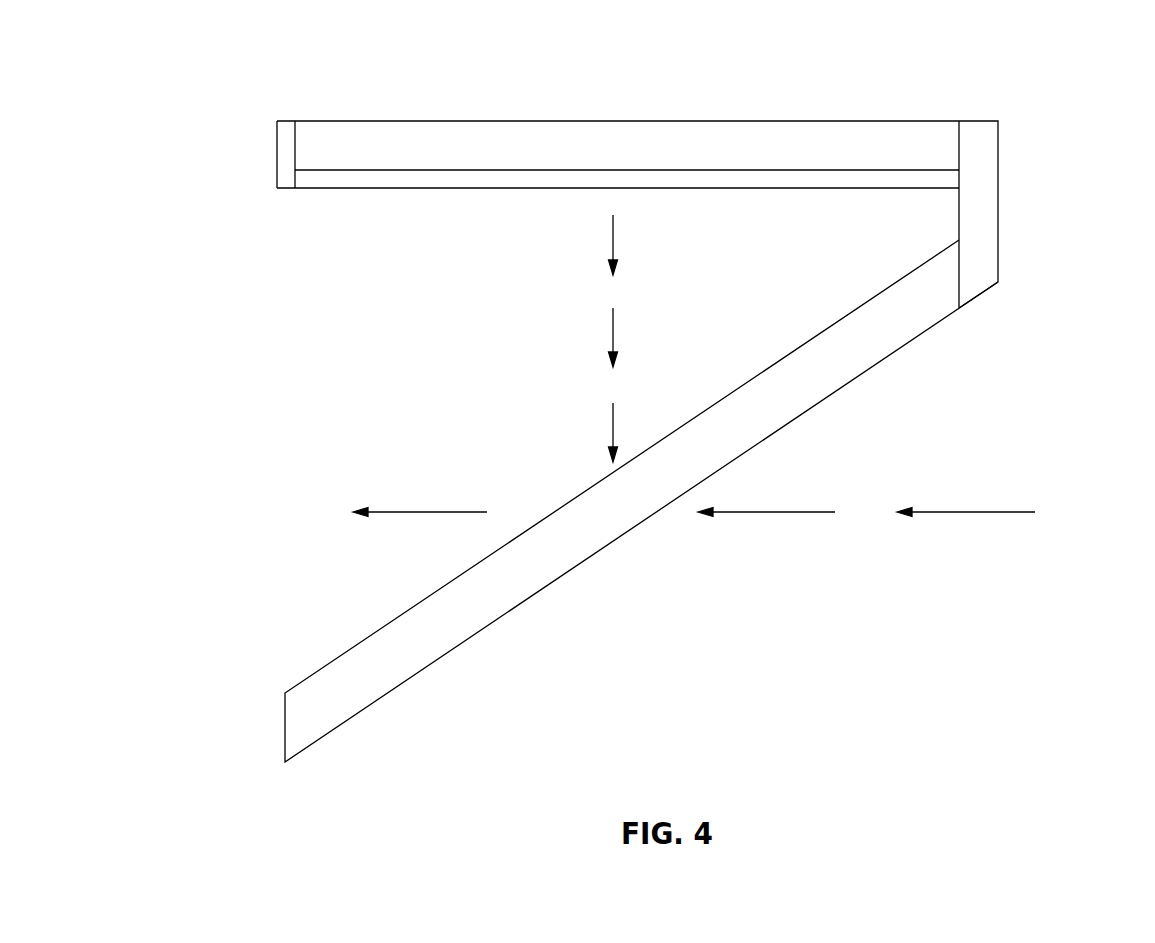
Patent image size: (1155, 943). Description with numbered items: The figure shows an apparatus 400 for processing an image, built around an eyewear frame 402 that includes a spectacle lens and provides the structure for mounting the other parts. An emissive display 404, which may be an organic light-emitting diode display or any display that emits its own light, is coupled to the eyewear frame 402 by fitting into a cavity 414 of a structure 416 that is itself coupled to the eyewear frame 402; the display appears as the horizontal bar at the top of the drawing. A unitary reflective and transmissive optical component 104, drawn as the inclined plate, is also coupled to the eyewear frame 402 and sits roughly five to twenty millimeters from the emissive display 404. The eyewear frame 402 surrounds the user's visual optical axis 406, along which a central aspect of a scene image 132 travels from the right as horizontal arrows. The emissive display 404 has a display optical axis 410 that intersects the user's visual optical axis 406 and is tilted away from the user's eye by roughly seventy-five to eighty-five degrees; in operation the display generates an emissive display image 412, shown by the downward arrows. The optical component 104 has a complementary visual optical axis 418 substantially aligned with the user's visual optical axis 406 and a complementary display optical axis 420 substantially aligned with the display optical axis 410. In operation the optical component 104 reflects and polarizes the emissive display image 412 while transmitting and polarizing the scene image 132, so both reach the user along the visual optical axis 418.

The apparatus 400 is at (1037, 66).
The unitary reflective and transmissive optical component 104 is at (295, 720).
The scene image 132 is at (965, 512).
The eyewear frame 402 is at (984, 203).
The emissive display 404 is at (478, 146).
The user's visual optical axis 406 is at (768, 512).
The display optical axis 410 is at (612, 340).
The emissive display image 412 is at (612, 245).
The cavity 414 is at (722, 169).
The structure 416 is at (295, 172).
The complementary visual optical axis 418 is at (418, 512).
The complementary display optical axis 420 is at (612, 435).